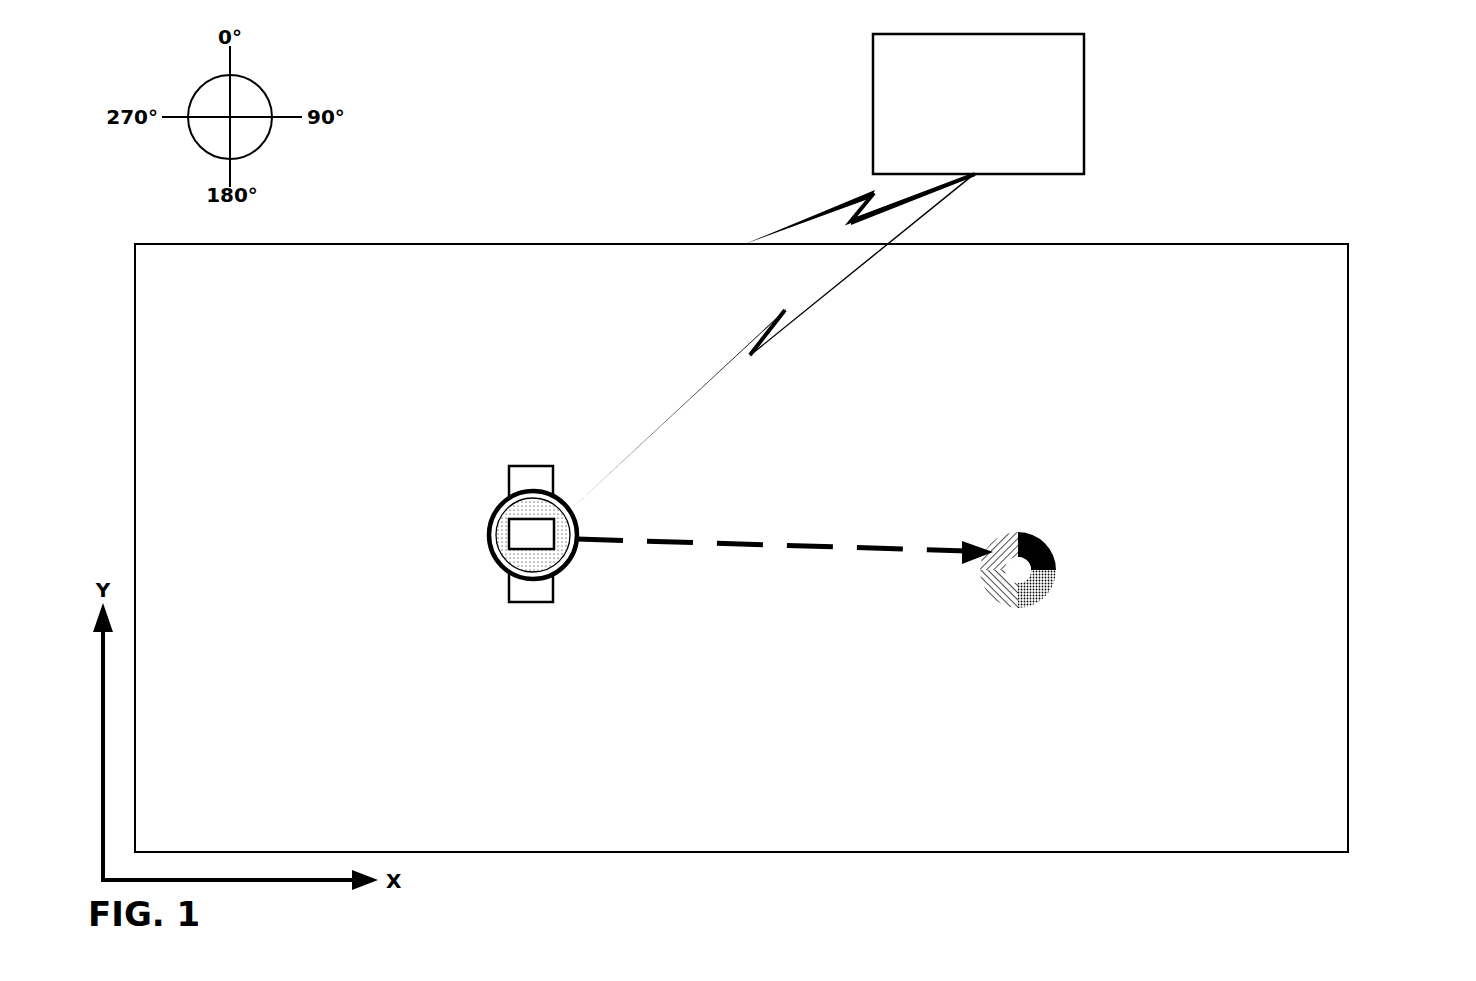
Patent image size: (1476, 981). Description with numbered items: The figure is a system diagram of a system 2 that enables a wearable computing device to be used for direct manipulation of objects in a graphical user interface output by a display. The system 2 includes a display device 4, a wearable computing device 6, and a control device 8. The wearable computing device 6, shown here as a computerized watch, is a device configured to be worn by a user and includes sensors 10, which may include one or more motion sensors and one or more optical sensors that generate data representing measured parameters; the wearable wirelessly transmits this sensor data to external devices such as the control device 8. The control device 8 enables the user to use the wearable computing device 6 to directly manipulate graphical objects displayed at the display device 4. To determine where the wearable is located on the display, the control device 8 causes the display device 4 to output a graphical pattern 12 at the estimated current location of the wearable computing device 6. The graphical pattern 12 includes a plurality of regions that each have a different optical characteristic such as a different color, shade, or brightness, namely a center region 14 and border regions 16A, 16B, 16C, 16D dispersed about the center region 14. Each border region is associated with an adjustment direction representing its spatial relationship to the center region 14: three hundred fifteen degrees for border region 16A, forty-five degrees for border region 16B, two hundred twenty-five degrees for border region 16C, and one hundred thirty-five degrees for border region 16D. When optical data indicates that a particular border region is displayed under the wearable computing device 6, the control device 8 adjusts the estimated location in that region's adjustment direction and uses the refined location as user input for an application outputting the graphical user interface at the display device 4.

The system 2 is at (1393, 78).
The display device 4 is at (735, 306).
The wearable computing device 6 is at (560, 534).
The control device 8 is at (971, 142).
The sensors 10 is at (521, 545).
The graphical pattern 12 is at (1029, 557).
The center region 14 is at (1018, 570).
The border region 16A is at (997, 542).
The border region 16B is at (1057, 558).
The border region 16C is at (995, 595).
The border region 16D is at (1035, 602).